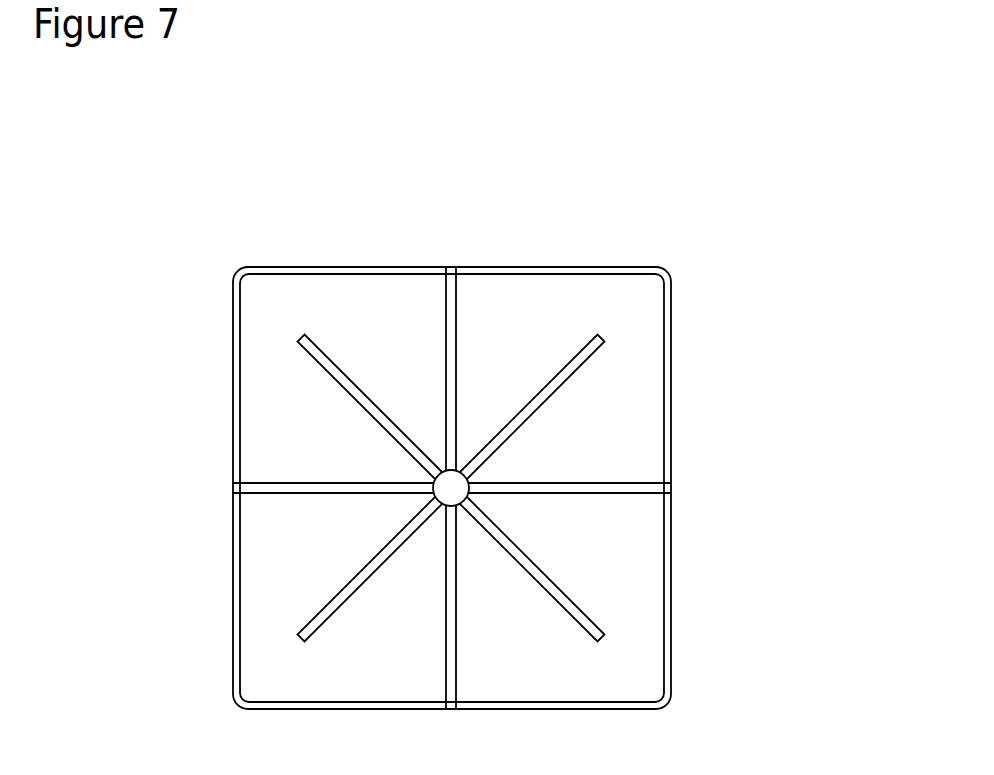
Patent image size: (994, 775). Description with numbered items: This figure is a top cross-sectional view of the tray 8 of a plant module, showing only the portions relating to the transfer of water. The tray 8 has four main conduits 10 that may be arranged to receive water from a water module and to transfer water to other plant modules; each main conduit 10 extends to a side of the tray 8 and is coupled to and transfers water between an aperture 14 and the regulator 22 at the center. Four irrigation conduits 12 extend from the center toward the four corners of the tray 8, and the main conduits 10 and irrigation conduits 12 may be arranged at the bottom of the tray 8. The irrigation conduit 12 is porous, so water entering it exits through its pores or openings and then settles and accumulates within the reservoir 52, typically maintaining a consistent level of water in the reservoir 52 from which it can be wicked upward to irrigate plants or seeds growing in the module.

The tray 8 is at (280, 262).
The main conduit 10 is at (270, 483).
The irrigation conduit 12 is at (347, 380).
The aperture 14 is at (450, 268).
The regulator 22 is at (455, 478).
The reservoir 52 is at (270, 385).